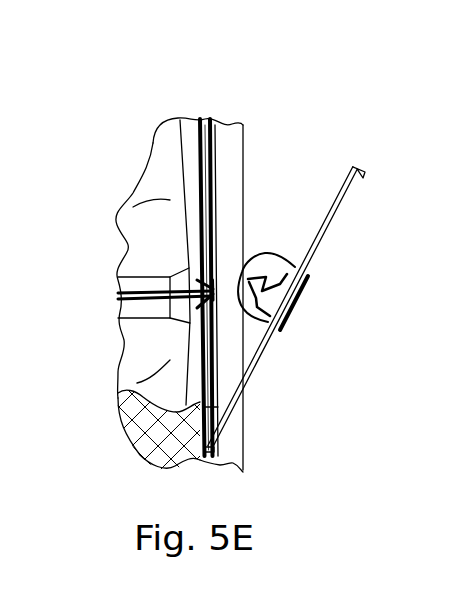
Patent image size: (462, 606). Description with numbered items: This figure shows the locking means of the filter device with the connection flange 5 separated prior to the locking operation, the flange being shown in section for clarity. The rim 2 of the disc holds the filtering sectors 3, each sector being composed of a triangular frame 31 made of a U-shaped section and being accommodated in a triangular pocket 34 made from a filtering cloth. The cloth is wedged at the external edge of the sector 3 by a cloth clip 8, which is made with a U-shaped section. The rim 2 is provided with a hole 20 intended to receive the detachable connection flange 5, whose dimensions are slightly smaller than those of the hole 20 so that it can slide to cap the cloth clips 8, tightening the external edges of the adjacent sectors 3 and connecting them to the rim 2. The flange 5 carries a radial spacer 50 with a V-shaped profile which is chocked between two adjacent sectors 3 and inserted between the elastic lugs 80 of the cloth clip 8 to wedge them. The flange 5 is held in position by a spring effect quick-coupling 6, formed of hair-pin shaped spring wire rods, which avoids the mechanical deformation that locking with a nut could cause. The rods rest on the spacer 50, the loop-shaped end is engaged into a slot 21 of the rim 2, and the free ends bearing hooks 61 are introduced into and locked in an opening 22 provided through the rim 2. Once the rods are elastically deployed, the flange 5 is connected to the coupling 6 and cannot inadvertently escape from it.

The rim 2 is at (252, 460).
The filtering sector 3 is at (147, 208).
The connection flange 5 is at (290, 330).
The spring effect quick-coupling 6 is at (337, 205).
The cloth clip 8 is at (200, 117).
The hole 20 is at (217, 285).
The slot 21 is at (217, 408).
The opening 22 is at (216, 190).
The triangular frame 31 is at (132, 285).
The triangular pocket 34 is at (143, 467).
The radial spacer 50 is at (310, 295).
The hook 61 is at (365, 168).
The elastic lug 80 is at (190, 272).